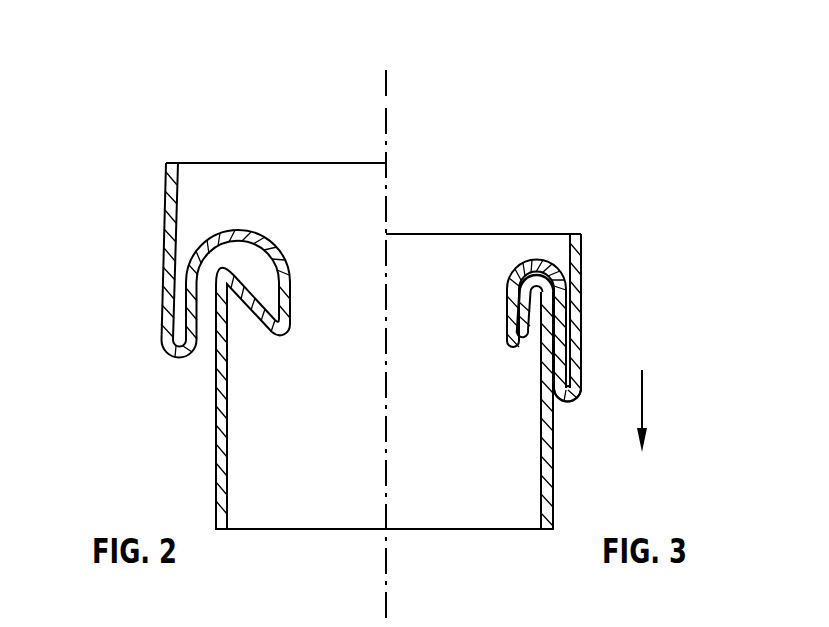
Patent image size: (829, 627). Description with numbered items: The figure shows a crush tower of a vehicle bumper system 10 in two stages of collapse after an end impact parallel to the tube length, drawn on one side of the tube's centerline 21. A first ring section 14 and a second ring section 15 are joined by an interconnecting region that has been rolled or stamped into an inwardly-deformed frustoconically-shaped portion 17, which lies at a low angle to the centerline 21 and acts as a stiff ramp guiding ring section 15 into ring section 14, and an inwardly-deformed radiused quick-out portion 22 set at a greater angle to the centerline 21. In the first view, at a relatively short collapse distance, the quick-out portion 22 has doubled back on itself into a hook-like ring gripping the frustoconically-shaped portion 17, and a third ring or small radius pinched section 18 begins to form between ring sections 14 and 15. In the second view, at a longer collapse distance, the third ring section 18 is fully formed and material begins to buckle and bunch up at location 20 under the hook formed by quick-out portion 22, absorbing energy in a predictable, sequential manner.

In FIG. 2, the bumper system 10 is at (218, 120).
In FIG. 3, the bumper system 10 is at (542, 177).
In FIG. 2, the first ring section 14 is at (164, 206).
In FIG. 3, the first ring section 14 is at (581, 284).
In FIG. 2, the second ring section 15 is at (216, 422).
In FIG. 3, the second ring section 15 is at (553, 452).
In FIG. 2, the frustoconically-shaped portion 17 is at (228, 348).
In FIG. 3, the frustoconically-shaped portion 17 is at (542, 358).
In FIG. 3, the third ring section 18 is at (566, 342).
In FIG. 3, the location of buckling 20 is at (563, 403).
In FIG. 2, the centerline 21 is at (387, 100).
In FIG. 2, the quick-out portion 22 is at (273, 245).
In FIG. 3, the quick-out portion 22 is at (507, 325).